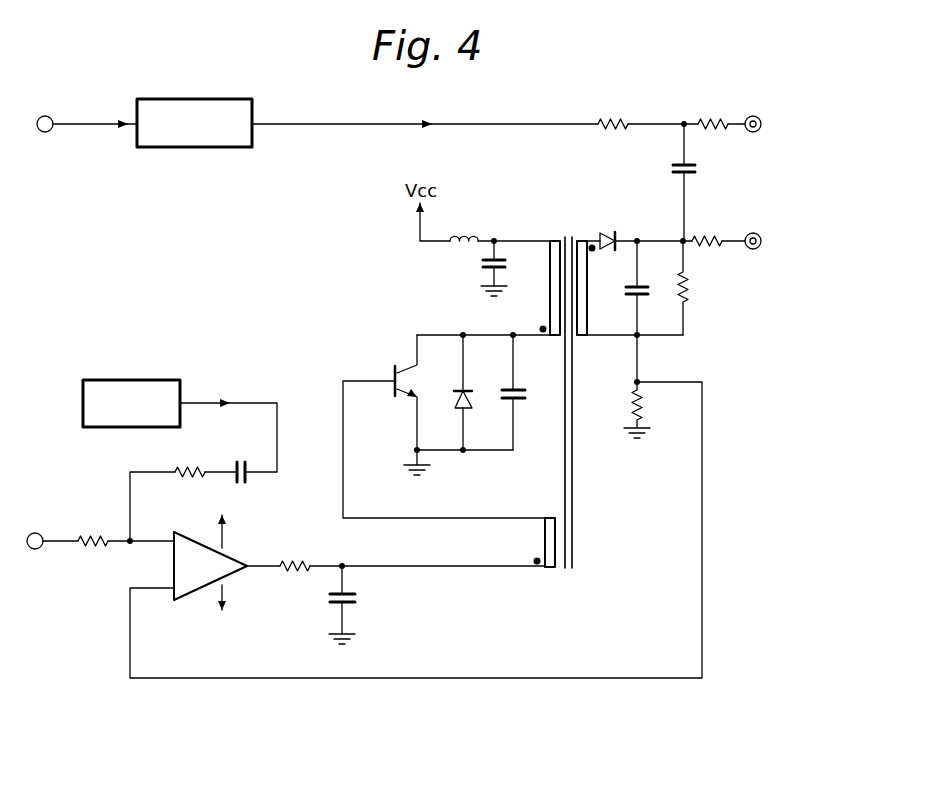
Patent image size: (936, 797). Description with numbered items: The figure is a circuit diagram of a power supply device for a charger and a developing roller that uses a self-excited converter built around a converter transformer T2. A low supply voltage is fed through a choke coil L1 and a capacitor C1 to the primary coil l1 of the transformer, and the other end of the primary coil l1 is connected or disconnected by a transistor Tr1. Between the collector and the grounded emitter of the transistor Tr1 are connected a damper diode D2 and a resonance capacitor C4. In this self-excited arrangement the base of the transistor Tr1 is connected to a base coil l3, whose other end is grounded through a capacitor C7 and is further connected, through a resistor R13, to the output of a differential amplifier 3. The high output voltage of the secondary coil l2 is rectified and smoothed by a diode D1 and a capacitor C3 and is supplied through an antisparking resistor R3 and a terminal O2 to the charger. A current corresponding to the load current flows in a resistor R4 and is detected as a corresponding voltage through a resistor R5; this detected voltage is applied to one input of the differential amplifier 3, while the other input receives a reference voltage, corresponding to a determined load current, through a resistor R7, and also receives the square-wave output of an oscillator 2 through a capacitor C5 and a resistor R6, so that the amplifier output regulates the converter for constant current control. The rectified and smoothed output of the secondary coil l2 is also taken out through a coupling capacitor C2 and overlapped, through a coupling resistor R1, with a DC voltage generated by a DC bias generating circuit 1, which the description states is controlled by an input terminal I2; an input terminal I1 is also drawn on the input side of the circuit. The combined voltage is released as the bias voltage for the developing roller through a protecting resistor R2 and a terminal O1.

The DC bias generating circuit 1 is at (203, 99).
The oscillator 2 is at (149, 381).
The differential amplifier 3 is at (236, 556).
The first input terminal I1 is at (47, 116).
The input terminal I2 is at (36, 533).
The terminal O1 is at (757, 117).
The terminal O2 is at (764, 233).
The coupling resistor R1 is at (601, 120).
The protecting resistor R2 is at (707, 119).
The antisparking resistor R3 is at (708, 233).
The resistor R4 is at (689, 288).
The resistor R5 is at (645, 412).
The resistor R6 is at (183, 466).
The resistor R7 is at (85, 548).
The resistor R13 is at (297, 561).
The capacitor C1 is at (482, 267).
The coupling capacitor C2 is at (697, 168).
The capacitor C3 is at (627, 292).
The resonance capacitor C4 is at (527, 396).
The capacitor C5 is at (243, 464).
The capacitor C7 is at (357, 602).
The choke coil L1 is at (478, 233).
The converter transformer T2 is at (561, 379).
The primary coil l1 is at (550, 285).
The secondary coil l2 is at (586, 273).
The base coil l3 is at (548, 524).
The diode D1 is at (610, 233).
The damper diode D2 is at (456, 404).
The transistor Tr1 is at (411, 365).